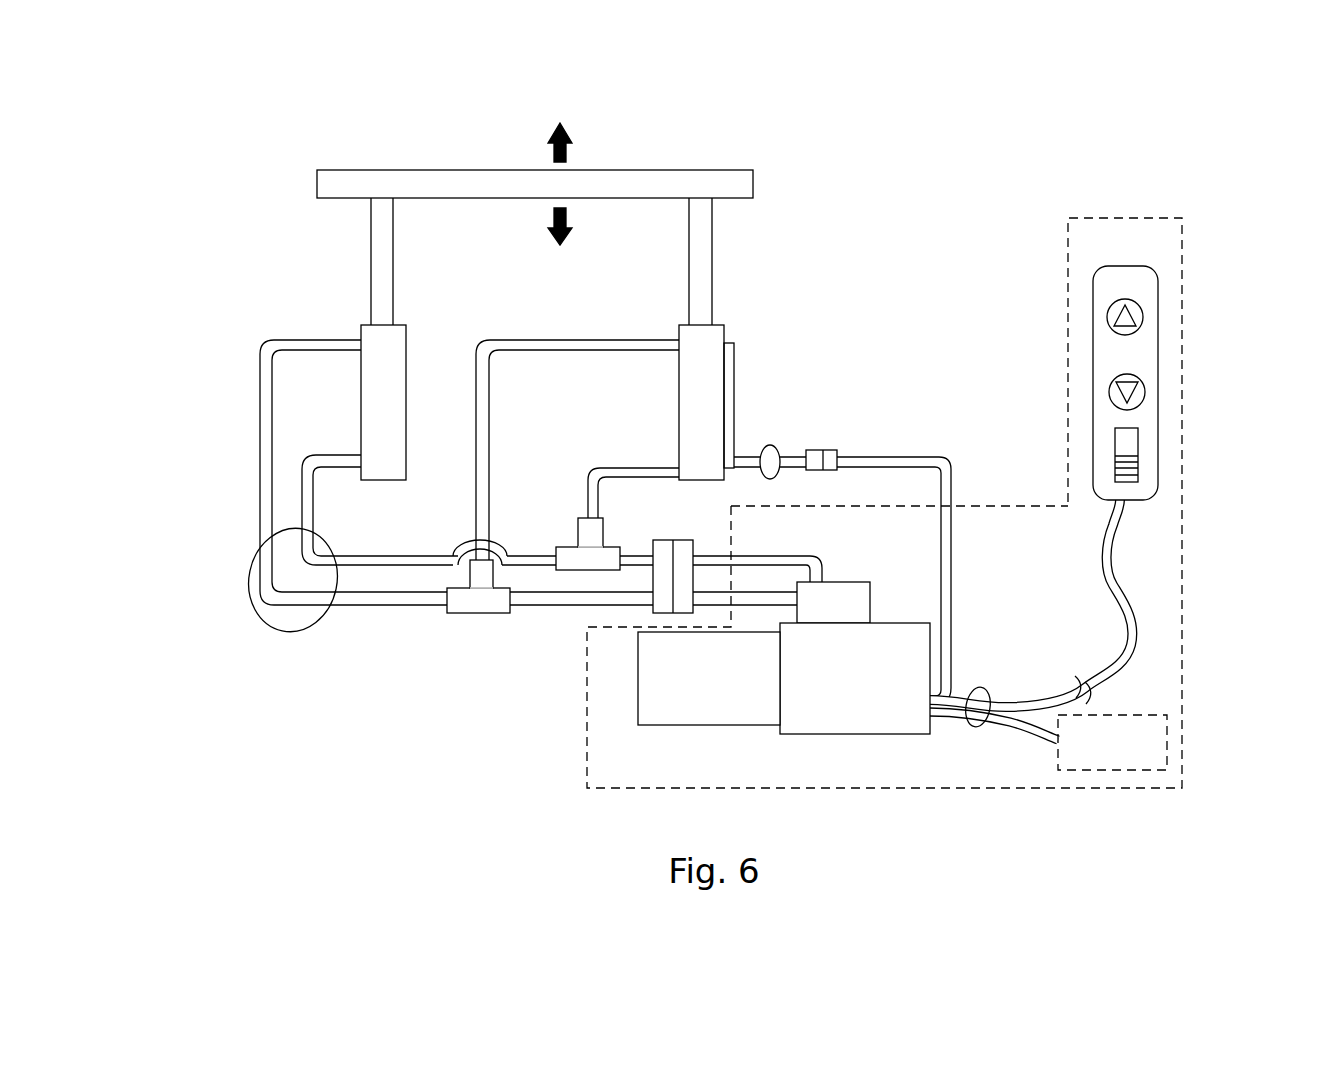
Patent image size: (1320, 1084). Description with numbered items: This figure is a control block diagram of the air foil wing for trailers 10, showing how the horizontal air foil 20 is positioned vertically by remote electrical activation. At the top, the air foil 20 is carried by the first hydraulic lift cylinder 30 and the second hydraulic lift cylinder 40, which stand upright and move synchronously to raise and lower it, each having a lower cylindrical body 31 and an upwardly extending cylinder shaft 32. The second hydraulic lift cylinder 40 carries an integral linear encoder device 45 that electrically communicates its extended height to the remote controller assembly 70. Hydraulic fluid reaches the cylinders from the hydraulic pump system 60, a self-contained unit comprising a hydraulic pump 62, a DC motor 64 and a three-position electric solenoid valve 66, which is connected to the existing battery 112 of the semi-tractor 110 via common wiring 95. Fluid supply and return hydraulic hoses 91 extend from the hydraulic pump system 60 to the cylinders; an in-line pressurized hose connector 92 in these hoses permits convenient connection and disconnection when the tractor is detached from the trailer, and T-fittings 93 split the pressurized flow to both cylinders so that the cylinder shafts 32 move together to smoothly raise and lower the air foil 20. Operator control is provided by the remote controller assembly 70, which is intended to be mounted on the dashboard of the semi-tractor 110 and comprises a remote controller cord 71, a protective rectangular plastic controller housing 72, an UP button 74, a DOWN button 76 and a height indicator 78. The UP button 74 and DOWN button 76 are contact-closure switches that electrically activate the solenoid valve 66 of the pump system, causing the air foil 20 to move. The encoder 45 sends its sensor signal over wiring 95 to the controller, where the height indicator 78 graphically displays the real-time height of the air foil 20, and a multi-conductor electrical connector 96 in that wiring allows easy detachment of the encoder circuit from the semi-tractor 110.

The air foil wing for trailers 10 is at (247, 758).
The horizontal air foil 20 is at (686, 182).
The first hydraulic lift cylinder 30 is at (422, 311).
The lower cylindrical body 31 is at (372, 355).
The cylinder shaft 32 is at (380, 234).
The second hydraulic lift cylinder 40 is at (757, 306).
The linear encoder device 45 is at (733, 425).
The hydraulic pump system 60 is at (697, 744).
The hydraulic pump 62 is at (913, 663).
The DC motor 64 is at (650, 697).
The three-position electric solenoid valve 66 is at (854, 595).
The remote controller assembly 70 is at (1205, 326).
The remote controller cord 71 is at (1138, 620).
The controller housing 72 is at (1149, 273).
The UP button 74 is at (1107, 313).
The DOWN button 76 is at (1107, 385).
The height indicator 78 is at (1139, 448).
The hydraulic hoses 91 is at (283, 633).
The in-line pressurized hose connector 92 is at (650, 580).
The T-fittings 93 is at (567, 572).
The wiring 95 is at (773, 447).
The multi-conductor electrical connector 96 is at (830, 457).
The semi-tractor 110 is at (1182, 522).
The battery 112 is at (1128, 755).